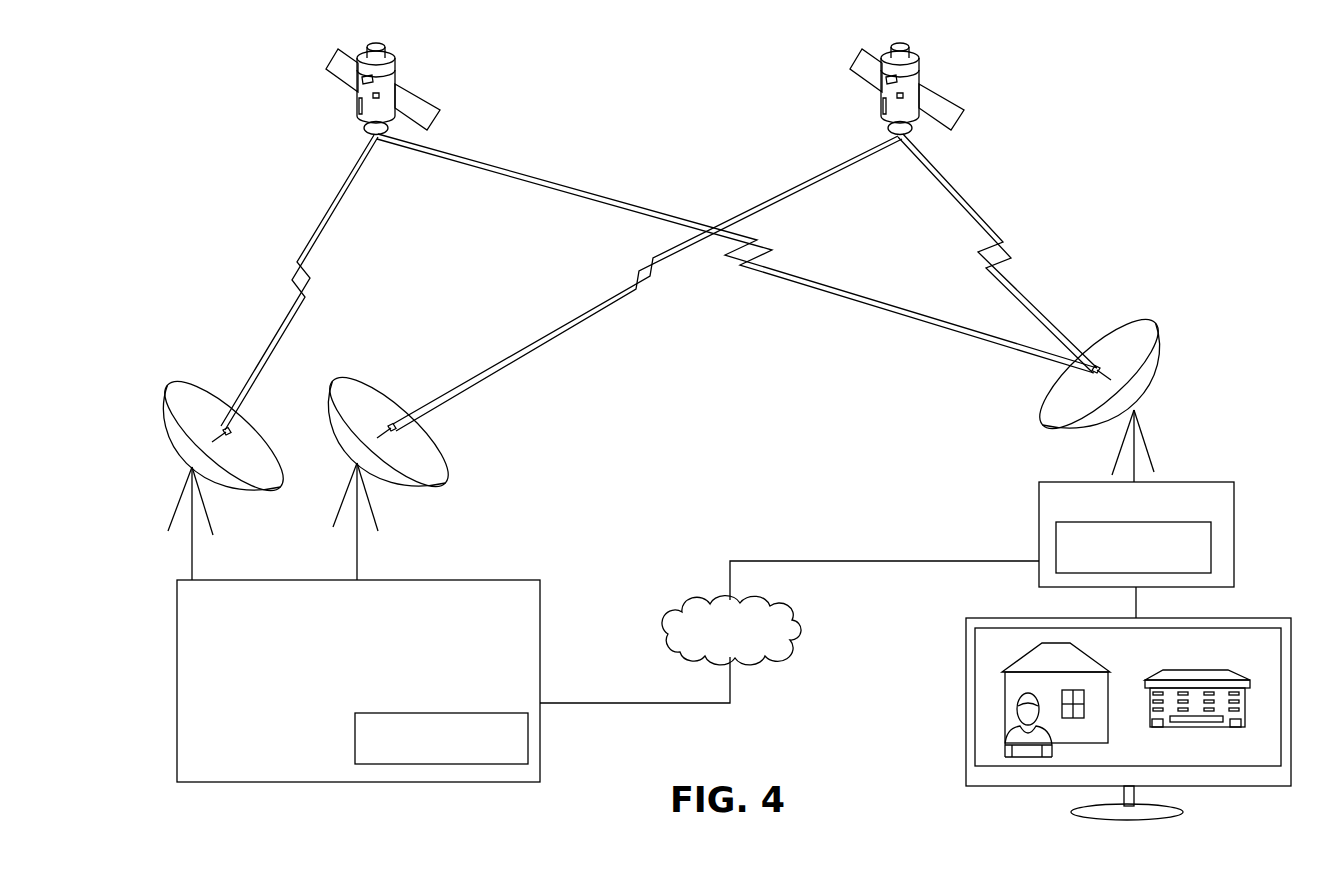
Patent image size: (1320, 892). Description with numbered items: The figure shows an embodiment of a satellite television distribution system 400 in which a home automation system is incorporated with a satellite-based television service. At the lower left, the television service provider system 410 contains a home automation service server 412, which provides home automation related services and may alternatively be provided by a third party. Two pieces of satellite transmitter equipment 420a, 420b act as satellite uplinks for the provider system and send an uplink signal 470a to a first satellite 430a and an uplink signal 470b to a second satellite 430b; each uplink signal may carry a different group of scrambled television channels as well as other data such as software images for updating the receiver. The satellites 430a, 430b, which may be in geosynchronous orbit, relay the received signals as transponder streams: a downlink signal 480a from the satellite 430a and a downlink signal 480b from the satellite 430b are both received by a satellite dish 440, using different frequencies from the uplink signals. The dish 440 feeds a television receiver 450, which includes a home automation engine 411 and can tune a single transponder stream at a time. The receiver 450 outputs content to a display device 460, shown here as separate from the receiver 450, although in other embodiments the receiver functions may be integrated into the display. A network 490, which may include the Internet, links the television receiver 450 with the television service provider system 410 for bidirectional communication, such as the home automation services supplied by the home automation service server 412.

The satellite television distribution system 400 is at (238, 116).
The television service provider system 410 is at (529, 580).
The home automation engine 411 is at (1133, 547).
The home automation service server 412 is at (441, 738).
The satellite transmitter equipment 420a is at (180, 385).
The satellite transmitter equipment 420b is at (366, 359).
The satellite 430a is at (427, 100).
The satellite 430b is at (955, 100).
The satellite dish 440 is at (1142, 322).
The television receiver 450 is at (1190, 482).
The display device 460 is at (1262, 618).
The uplink signal 470a is at (778, 210).
The uplink signal 470b is at (340, 222).
The downlink signal 480a is at (541, 172).
The downlink signal 480b is at (985, 210).
The network 490 is at (668, 612).